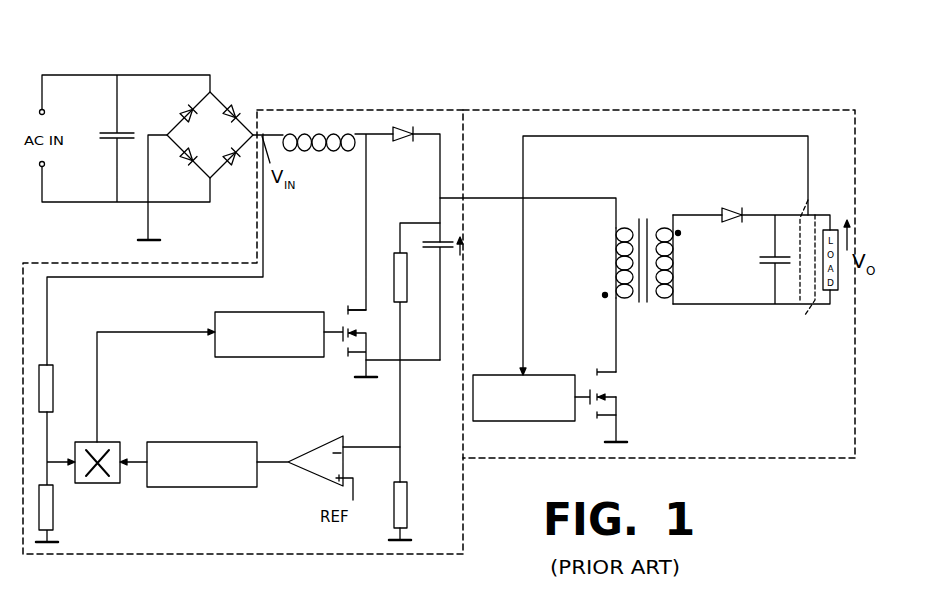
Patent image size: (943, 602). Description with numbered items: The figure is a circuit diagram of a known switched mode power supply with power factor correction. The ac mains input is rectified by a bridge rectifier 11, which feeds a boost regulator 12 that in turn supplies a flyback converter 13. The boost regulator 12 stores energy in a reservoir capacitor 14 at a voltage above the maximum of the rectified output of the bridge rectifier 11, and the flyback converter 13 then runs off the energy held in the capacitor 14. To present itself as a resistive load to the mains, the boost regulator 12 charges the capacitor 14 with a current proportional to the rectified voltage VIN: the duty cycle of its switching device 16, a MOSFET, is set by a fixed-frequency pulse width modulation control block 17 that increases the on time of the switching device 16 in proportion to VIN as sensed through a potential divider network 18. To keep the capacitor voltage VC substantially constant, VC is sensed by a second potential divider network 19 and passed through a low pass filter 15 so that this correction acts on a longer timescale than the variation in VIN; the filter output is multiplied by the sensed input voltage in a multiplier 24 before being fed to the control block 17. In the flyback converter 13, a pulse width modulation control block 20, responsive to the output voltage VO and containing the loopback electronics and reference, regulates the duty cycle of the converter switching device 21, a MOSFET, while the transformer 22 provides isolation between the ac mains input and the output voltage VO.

The bridge rectifier 11 is at (230, 71).
The boost regulator 12 is at (366, 110).
The flyback converter 13 is at (638, 110).
The reservoir capacitor 14 is at (436, 240).
The low pass filter 15 is at (196, 442).
The switching device 16 is at (343, 325).
The pulse width modulation control block 17 is at (262, 357).
The potential divider network 18 is at (62, 418).
The potential divider network 19 is at (420, 430).
The pulse width modulation control block 20 is at (548, 375).
The switching device 21 is at (620, 403).
The transformer 22 is at (668, 308).
The multiplier 24 is at (90, 485).